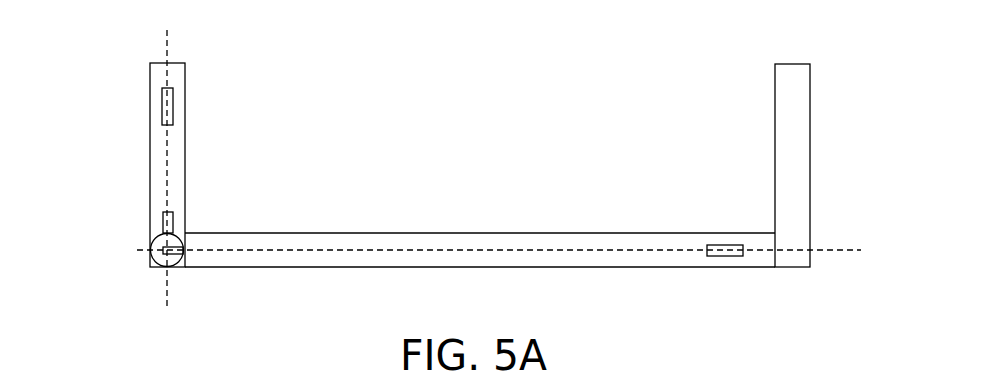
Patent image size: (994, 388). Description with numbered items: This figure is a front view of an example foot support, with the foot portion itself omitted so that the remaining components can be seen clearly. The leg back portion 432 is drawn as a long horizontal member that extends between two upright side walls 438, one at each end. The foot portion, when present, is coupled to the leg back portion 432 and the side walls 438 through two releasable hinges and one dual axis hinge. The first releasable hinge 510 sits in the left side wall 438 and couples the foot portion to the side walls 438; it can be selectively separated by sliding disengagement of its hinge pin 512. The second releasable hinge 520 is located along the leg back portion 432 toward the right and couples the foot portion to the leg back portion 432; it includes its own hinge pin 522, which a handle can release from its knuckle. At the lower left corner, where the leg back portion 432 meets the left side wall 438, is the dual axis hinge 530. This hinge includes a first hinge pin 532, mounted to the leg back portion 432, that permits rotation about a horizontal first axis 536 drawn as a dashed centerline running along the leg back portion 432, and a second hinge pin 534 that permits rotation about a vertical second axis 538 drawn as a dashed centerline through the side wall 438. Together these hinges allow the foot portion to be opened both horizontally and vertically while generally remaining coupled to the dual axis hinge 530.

The side wall 438 is at (150, 162).
The leg back portion 432 is at (310, 267).
The dual axis hinge 530 is at (116, 252).
The first releasable hinge 510 is at (154, 101).
The hinge pin 512 is at (173, 102).
The second axis 538 is at (167, 142).
The second hinge pin 534 is at (173, 222).
The first hinge pin 532 is at (183, 243).
The first axis 536 is at (360, 250).
The hinge pin 522 is at (735, 245).
The second releasable hinge 520 is at (711, 234).